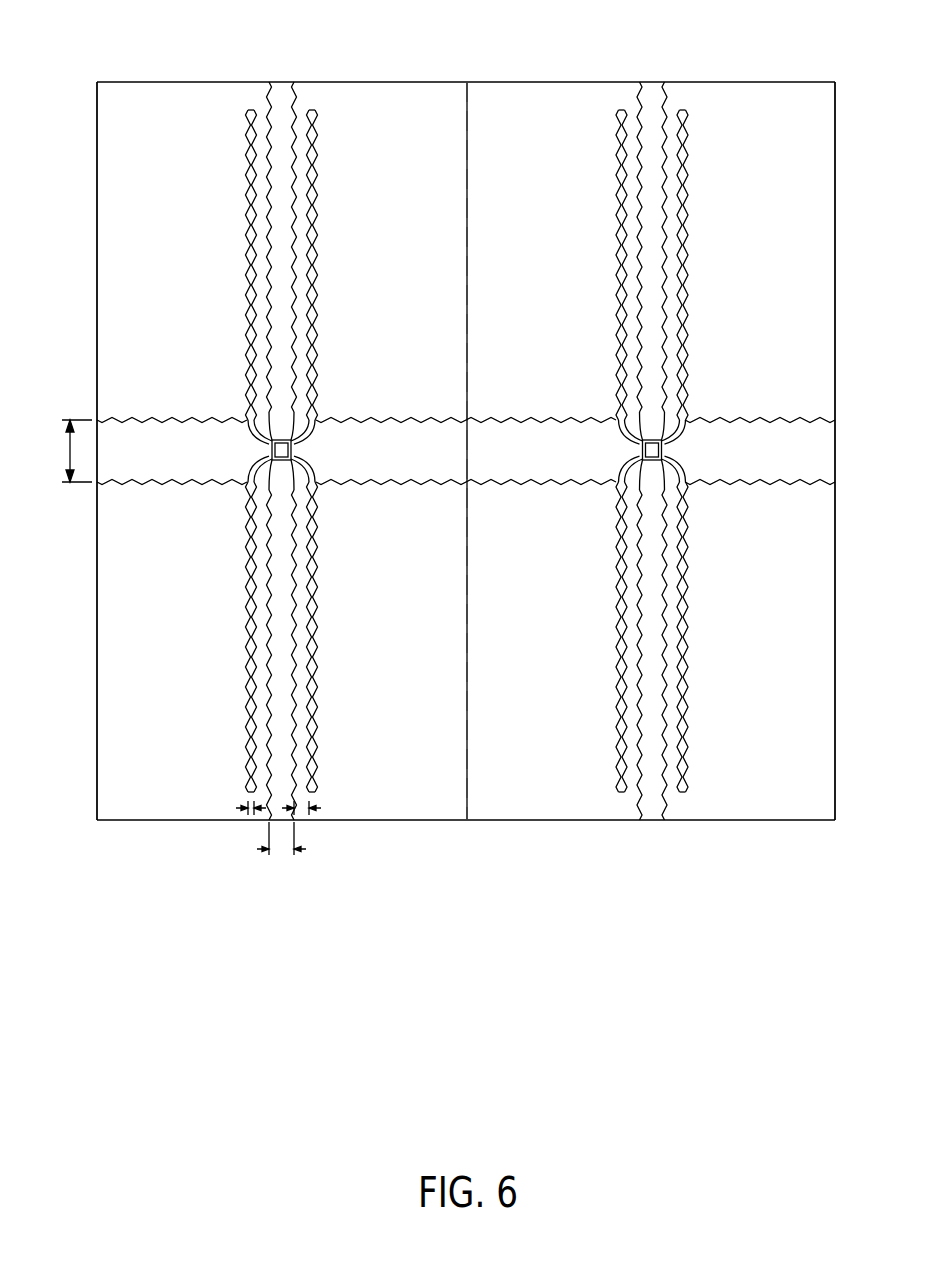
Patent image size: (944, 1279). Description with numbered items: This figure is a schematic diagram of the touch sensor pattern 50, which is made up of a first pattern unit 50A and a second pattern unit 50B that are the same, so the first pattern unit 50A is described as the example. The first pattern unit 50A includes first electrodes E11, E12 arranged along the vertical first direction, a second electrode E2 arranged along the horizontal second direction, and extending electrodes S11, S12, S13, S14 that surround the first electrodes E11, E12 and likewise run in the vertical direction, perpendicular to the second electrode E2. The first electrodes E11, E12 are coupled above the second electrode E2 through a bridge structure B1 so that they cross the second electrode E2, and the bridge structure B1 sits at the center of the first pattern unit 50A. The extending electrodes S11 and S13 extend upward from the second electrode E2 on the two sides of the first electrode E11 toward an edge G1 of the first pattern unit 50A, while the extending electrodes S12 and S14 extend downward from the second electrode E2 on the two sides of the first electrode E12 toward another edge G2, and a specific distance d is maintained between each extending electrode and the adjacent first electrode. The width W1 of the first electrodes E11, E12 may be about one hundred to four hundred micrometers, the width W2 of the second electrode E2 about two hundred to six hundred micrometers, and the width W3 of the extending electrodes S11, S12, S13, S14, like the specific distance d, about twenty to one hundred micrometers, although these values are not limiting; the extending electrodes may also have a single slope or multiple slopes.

The touch sensor pattern 50 is at (110, 32).
The first pattern unit 50A is at (162, 124).
The second pattern unit 50B is at (532, 124).
The edge G1 is at (228, 82).
The another edge G2 is at (380, 821).
The first electrode E11 is at (296, 101).
The first electrode E12 is at (268, 808).
The second electrode E2 is at (132, 437).
The bridge structure B1 is at (282, 450).
The extending electrode S11 is at (246, 222).
The extending electrode S12 is at (252, 600).
The extending electrode S13 is at (317, 185).
The extending electrode S14 is at (317, 717).
The width of the first electrodes W1 is at (281, 858).
The width of the second electrode W2 is at (61, 451).
The width of the extending electrodes W3 is at (249, 812).
The specific distance d is at (306, 812).